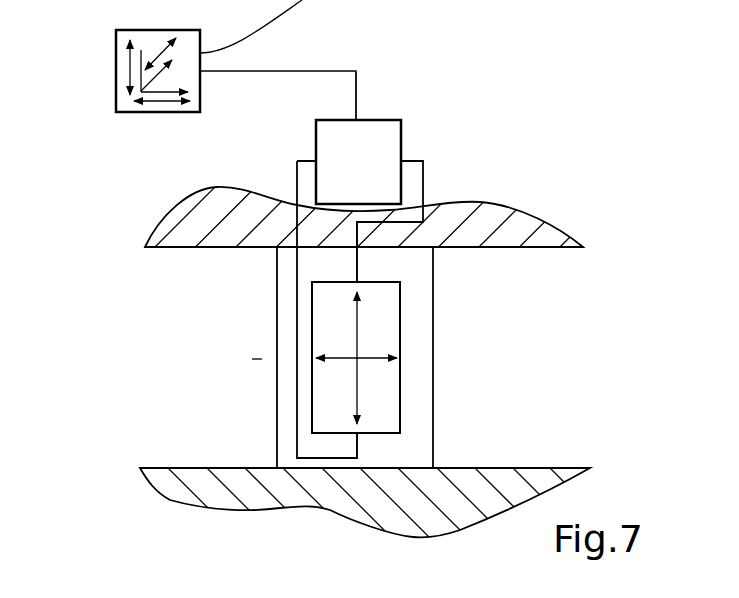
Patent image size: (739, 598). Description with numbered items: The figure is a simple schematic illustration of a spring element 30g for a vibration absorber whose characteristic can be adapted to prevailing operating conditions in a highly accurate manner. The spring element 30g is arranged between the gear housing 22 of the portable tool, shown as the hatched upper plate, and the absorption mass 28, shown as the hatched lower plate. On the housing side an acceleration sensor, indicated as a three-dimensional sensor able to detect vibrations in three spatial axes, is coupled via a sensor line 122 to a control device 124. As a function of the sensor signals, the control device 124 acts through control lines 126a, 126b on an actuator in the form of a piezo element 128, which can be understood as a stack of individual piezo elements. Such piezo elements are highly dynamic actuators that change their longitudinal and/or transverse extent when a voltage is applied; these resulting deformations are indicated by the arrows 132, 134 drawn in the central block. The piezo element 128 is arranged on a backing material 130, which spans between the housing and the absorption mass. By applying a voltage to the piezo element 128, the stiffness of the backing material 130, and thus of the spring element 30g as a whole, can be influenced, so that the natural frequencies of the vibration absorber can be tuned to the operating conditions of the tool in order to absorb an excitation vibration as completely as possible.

The gear housing 22 is at (527, 222).
The absorption mass 28 is at (535, 470).
The spring element 30g is at (240, 359).
The sensor line 122 is at (357, 90).
The control device 124 is at (402, 135).
The control line 126a is at (297, 178).
The control line 126b is at (425, 185).
The piezo element 128 is at (400, 328).
The backing material 130 is at (433, 412).
The arrow 132 is at (357, 390).
The arrow 134 is at (347, 355).